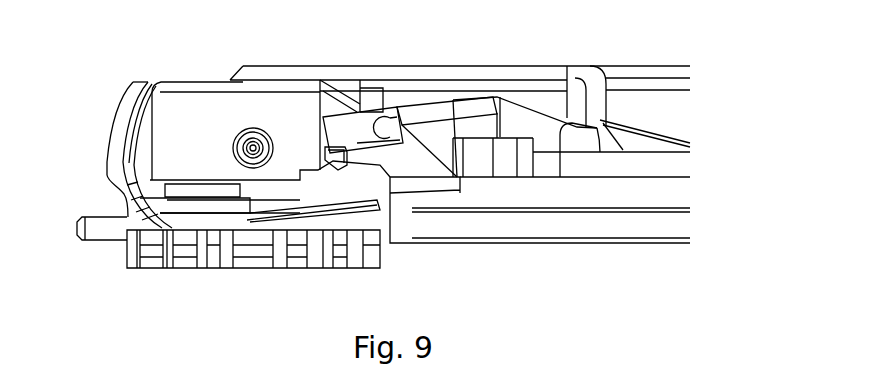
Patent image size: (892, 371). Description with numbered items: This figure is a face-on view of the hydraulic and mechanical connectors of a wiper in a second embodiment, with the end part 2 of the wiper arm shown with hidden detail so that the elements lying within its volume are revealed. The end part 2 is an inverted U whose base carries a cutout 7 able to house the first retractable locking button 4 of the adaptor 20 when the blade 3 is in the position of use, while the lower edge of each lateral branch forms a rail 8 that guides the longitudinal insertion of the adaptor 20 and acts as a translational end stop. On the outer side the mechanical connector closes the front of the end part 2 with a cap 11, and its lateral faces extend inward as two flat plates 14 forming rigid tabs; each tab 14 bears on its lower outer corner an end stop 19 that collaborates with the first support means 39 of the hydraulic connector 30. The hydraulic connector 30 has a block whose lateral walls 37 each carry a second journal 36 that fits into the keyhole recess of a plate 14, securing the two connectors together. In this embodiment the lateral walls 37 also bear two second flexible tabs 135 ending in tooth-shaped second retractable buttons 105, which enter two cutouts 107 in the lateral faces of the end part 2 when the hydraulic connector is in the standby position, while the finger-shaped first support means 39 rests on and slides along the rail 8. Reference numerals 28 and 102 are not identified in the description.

The end part 2 is at (217, 117).
The blade 3 is at (677, 195).
The first retractable locking button 4 is at (368, 84).
The cutout 7 is at (430, 80).
The rail 8 is at (432, 193).
The cap 11 is at (117, 126).
The flat plates 14 is at (335, 123).
The end stop 19 is at (320, 190).
The adaptor 20 is at (163, 108).
The block 28 is at (193, 193).
The hydraulic connector 30 is at (518, 118).
The second journals 36 is at (380, 127).
The lateral walls 37 is at (443, 133).
The first support means 39 is at (348, 175).
The pin 102 is at (140, 217).
The second retractable buttons 105 is at (513, 165).
The cutouts 107 is at (487, 165).
The second flexible tabs 135 is at (472, 165).